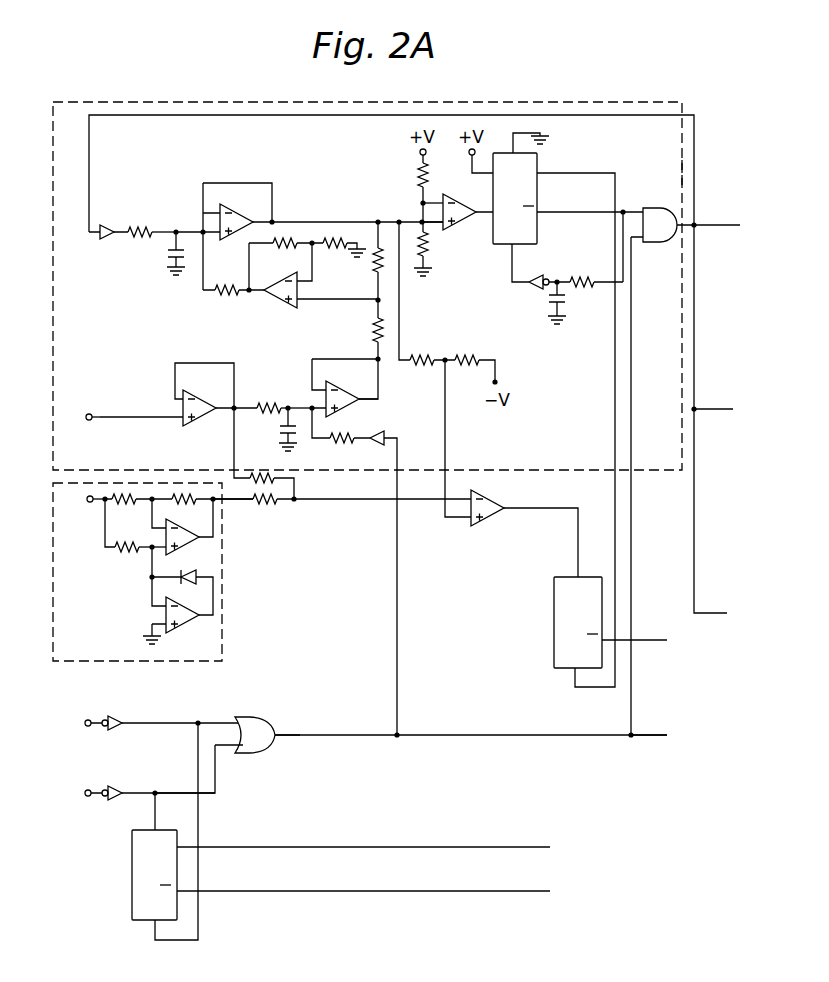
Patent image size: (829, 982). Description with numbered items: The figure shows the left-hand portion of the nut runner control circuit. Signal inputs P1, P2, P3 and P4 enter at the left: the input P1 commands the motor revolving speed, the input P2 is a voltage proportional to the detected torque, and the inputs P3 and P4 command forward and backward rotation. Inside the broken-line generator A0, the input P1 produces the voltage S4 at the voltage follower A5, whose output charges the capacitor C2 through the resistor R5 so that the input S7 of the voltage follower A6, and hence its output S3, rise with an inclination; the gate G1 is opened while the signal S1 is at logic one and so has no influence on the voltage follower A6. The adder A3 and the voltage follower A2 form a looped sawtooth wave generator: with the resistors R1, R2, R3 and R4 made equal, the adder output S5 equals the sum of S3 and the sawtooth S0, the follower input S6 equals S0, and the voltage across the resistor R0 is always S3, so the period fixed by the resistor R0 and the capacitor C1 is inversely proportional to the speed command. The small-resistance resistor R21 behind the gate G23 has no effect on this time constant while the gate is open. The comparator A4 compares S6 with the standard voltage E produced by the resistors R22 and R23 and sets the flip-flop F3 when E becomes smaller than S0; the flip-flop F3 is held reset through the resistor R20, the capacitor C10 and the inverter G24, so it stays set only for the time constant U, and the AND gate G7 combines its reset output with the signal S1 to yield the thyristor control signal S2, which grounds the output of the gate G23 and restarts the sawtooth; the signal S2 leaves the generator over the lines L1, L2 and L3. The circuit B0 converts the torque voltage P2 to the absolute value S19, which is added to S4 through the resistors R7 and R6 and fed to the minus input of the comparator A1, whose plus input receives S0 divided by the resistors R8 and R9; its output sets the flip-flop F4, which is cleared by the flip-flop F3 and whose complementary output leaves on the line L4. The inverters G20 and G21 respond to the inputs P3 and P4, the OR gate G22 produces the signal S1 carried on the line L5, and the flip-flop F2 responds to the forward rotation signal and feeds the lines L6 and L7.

The generator A0 is at (53, 281).
The absolute value converting circuit B0 is at (53, 572).
The gate G23 is at (113, 221).
The small-resistance resistor R21 is at (139, 241).
The capacitor C1 is at (165, 252).
The input of voltage follower A2 S6 is at (202, 229).
The voltage follower amplifier A2 is at (240, 215).
The sawtooth wave signal S0 is at (329, 221).
The resistor R1 is at (282, 254).
The resistor R2 is at (339, 254).
The resistor R0 is at (226, 279).
The output of adder A3 S5 is at (248, 291).
The adder A3 is at (280, 307).
The resistor R3 is at (377, 260).
The resistor R4 is at (364, 331).
The standard voltage E is at (422, 201).
The resistor R22 is at (442, 176).
The resistor R23 is at (440, 239).
The comparator A4 is at (470, 211).
The flip-flop F3 is at (556, 189).
The inverter G24 is at (534, 266).
The resistor R20 is at (591, 248).
The capacitor C10 is at (544, 305).
The thyristor control signal S2 is at (682, 176).
The AND gate G7 is at (662, 225).
The output line L1 is at (715, 216).
The output line L2 is at (712, 399).
The output line L3 is at (710, 586).
The rotation command signal S1 is at (631, 347).
The output line L4 is at (634, 628).
The output line L5 is at (649, 725).
The flip-flop F4 is at (578, 623).
The comparator A1 is at (485, 526).
The resistor R8 is at (423, 293).
The resistor R9 is at (471, 359).
The motor speed command input P1 is at (80, 420).
The motor speed-proportional voltage S4 is at (114, 417).
The voltage follower amplifier A5 is at (198, 425).
The resistor R5 is at (269, 398).
The input voltage of voltage follower A6 S7 is at (288, 405).
The capacitor C2 is at (278, 430).
The voltage follower amplifier A6 is at (351, 393).
The output voltage of voltage follower A6 S3 is at (376, 391).
The gate G1 is at (354, 571).
The torque-proportional voltage input P2 is at (82, 501).
The resistor R7 is at (362, 510).
The absolute-value output voltage S19 is at (241, 503).
The resistor R6 is at (285, 479).
The inverter G20 is at (118, 719).
The forward rotation signal input P3 is at (73, 725).
The OR gate G22 is at (227, 755).
The inverter G21 is at (118, 789).
The backward rotation signal input P4 is at (73, 795).
The flip-flop F2 is at (165, 831).
The output line L6 is at (363, 836).
The output line L7 is at (363, 880).